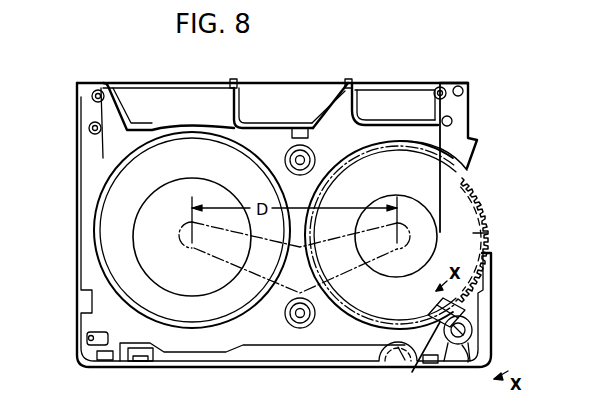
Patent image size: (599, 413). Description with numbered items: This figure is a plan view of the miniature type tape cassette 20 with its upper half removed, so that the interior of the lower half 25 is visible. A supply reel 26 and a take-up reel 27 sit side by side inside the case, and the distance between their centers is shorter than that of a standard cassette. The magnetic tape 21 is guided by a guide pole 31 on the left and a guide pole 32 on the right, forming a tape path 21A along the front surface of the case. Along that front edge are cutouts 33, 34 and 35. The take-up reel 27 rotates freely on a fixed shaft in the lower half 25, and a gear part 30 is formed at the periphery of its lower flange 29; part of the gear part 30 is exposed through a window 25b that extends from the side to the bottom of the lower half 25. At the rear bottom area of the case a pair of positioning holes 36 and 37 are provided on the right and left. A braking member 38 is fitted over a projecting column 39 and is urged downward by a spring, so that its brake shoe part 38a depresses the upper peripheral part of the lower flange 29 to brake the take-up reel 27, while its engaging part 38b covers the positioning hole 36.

The miniature type tape cassette 20 is at (132, 53).
The magnetic tape 21 is at (94, 152).
The tape path 21A is at (317, 83).
The lower half 25 is at (283, 362).
The window 25b is at (466, 165).
The supply reel 26 is at (93, 272).
The take-up reel 27 is at (362, 333).
The lower flange 29 is at (473, 233).
The gear part 30 is at (486, 216).
The guide pole 31 is at (98, 90).
The guide pole 32 is at (441, 83).
The cutout 33 is at (158, 102).
The cutout 34 is at (273, 108).
The cutout 35 is at (388, 106).
The positioning hole 36 is at (473, 337).
The positioning hole 37 is at (88, 340).
The braking member 38 is at (451, 346).
The brake shoe part 38a is at (404, 358).
The engaging part 38b is at (468, 362).
The projecting column 39 is at (471, 325).